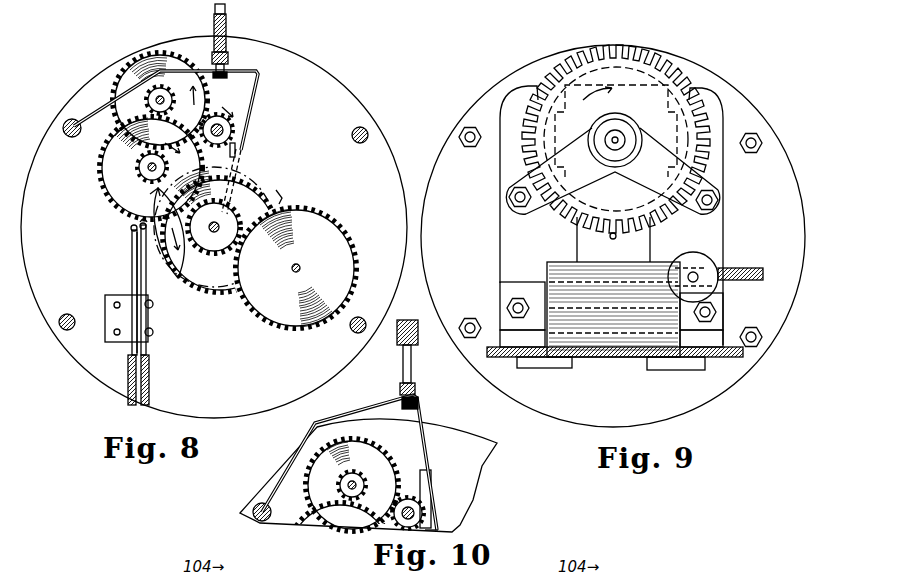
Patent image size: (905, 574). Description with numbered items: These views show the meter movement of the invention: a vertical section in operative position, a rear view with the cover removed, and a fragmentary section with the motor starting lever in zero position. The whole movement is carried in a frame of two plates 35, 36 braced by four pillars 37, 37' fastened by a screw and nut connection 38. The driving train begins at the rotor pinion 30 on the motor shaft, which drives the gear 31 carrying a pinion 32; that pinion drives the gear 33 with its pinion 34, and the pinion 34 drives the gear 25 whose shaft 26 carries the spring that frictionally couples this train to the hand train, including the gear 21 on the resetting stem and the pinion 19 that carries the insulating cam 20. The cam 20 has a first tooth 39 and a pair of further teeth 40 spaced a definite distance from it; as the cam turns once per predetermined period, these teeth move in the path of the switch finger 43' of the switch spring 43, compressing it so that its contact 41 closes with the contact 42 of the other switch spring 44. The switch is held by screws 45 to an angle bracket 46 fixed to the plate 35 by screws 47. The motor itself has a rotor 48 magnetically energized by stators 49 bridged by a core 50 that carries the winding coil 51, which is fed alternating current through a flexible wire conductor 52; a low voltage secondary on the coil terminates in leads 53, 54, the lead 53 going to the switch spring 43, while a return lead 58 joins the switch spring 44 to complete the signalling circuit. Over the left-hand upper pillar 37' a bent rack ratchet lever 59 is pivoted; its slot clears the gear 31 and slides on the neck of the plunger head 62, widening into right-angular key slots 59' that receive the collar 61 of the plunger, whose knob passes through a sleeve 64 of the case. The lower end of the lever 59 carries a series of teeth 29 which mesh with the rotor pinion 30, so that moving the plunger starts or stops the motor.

In FIG. 8, the pinion 19 is at (213, 238).
In FIG. 8, the cam 20 is at (176, 253).
In FIG. 8, the gear 21 is at (341, 239).
In FIG. 8, the gear 25 is at (224, 300).
In FIG. 8, the shaft 26 is at (222, 220).
In FIG. 10, the teeth 29 is at (440, 524).
In FIG. 8, the rotor pinion 30 is at (233, 132).
In FIG. 10, the rotor pinion 30 is at (395, 525).
In FIG. 8, the gear 31 is at (141, 59).
In FIG. 10, the gear 31 is at (376, 456).
In FIG. 8, the pinion 32 is at (152, 101).
In FIG. 10, the pinion 32 is at (346, 486).
In FIG. 8, the gear 33 is at (115, 167).
In FIG. 10, the gear 33 is at (330, 522).
In FIG. 8, the pinion 34 is at (151, 158).
In FIG. 8, the plate 35 is at (80, 353).
In FIG. 10, the plate 35 is at (478, 477).
In FIG. 9, the plate 36 is at (492, 100).
In FIG. 8, the bracing pillar 37 is at (197, 238).
In FIG. 9, the bracing pillar 37 is at (622, 219).
In FIG. 8, the bracing pillar 37' is at (53, 118).
In FIG. 10, the bracing pillar 37' is at (243, 506).
In FIG. 9, the screw and nut connection 38 is at (463, 132).
In FIG. 8, the first projection or tooth 39 is at (158, 191).
In FIG. 8, the further teeth 40 is at (280, 196).
In FIG. 8, the contact 41 is at (140, 228).
In FIG. 8, the contact 42 is at (133, 241).
In FIG. 8, the switch spring 43 is at (120, 290).
In FIG. 8, the switch finger 43' is at (129, 215).
In FIG. 8, the switch spring 44 is at (133, 271).
In FIG. 8, the screws 45 is at (153, 332).
In FIG. 8, the angle bracket 46 is at (110, 297).
In FIG. 8, the screws 47 is at (114, 331).
In FIG. 9, the rotor 48 is at (657, 75).
In FIG. 9, the stators 49 is at (526, 98).
In FIG. 9, the core 50 is at (505, 292).
In FIG. 9, the winding coil 51 is at (625, 346).
In FIG. 9, the flexible wire conductor 52 is at (746, 270).
In FIG. 8, the lead 53 is at (150, 382).
In FIG. 9, the lead 53 is at (510, 352).
In FIG. 9, the lead 54 is at (726, 362).
In FIG. 8, the lead 58 is at (129, 371).
In FIG. 8, the rack ratchet lever 59 is at (157, 109).
In FIG. 10, the rack ratchet lever 59 is at (349, 456).
In FIG. 8, the key slots 59' is at (255, 139).
In FIG. 10, the key slots 59' is at (437, 460).
In FIG. 10, the collar 61 is at (420, 411).
In FIG. 8, the plunger head 62 is at (229, 50).
In FIG. 10, the plunger head 62 is at (416, 386).
In FIG. 10, the sleeve 64 is at (401, 343).